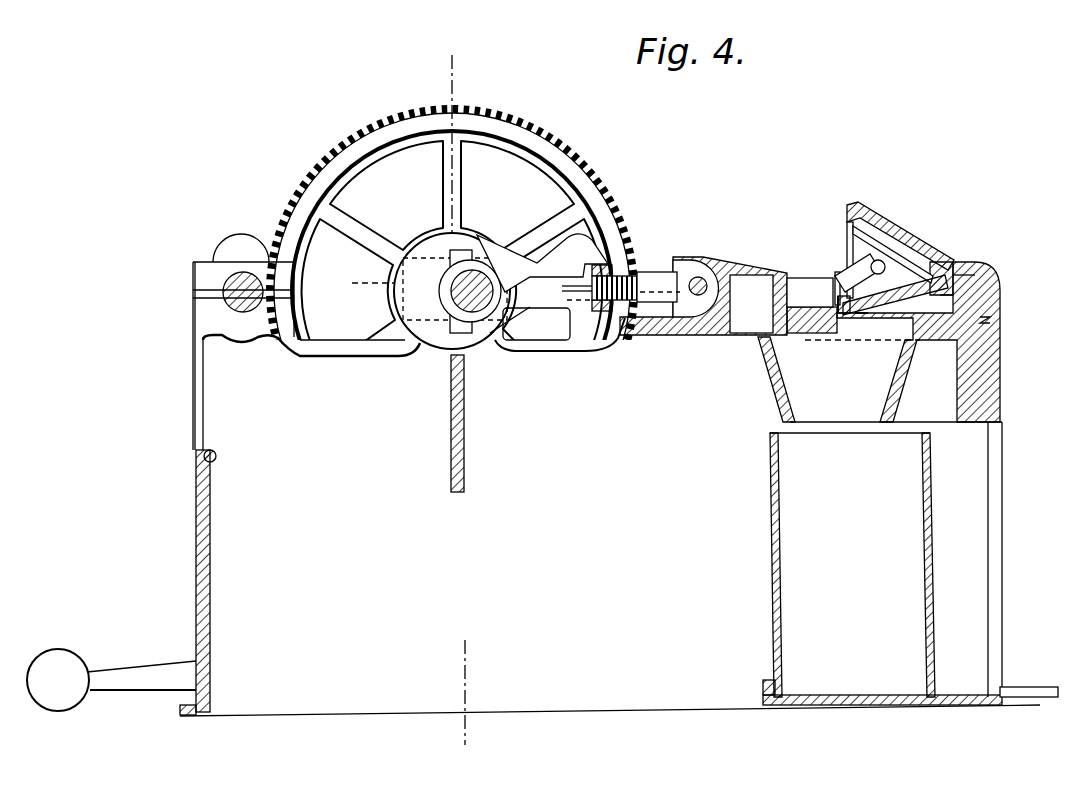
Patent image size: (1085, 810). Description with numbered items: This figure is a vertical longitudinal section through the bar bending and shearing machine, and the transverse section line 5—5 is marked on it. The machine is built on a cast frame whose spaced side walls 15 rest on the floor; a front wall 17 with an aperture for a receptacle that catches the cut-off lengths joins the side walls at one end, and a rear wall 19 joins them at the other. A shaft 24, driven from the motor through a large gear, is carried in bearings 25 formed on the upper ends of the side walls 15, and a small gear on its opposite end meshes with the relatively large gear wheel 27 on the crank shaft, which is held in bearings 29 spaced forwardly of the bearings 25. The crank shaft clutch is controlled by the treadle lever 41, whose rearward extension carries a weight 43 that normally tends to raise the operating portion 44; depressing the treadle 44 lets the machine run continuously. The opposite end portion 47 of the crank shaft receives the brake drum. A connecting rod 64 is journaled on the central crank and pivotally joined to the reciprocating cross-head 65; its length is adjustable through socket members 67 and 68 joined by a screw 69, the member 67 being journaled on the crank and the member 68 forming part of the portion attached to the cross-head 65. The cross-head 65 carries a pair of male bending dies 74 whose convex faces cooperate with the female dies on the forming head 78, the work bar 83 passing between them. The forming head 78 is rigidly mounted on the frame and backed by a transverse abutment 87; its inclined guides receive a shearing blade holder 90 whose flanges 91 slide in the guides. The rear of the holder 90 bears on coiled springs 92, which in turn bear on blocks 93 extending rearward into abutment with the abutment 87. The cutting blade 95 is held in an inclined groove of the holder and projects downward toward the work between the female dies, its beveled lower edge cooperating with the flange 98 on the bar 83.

The section line 5— 5 is at (456, 73).
The side walls 15 is at (610, 517).
The front wall 17 is at (982, 385).
The rear wall 19 is at (210, 503).
The shaft 24 is at (224, 304).
The bearings 25 is at (199, 262).
The gear wheel 27 is at (297, 190).
The bearings 29 is at (352, 294).
The treadle lever 41 is at (168, 678).
The weight 43 is at (72, 663).
The operating portion 44 is at (1020, 690).
The shaft end portion 47 is at (483, 312).
The connecting rod 64 is at (522, 308).
The cross-head member 65 is at (777, 264).
The socket member 67 is at (562, 262).
The socket member 68 is at (652, 283).
The screw 69 is at (611, 316).
The male bending dies 74 is at (798, 287).
The forming head 78 is at (887, 221).
The bar 83 is at (843, 273).
The abutment 87 is at (977, 290).
The shearing blade holder 90 is at (890, 271).
The flanges 91 is at (935, 262).
The coiled springs 92 is at (963, 262).
The blocks 93 is at (957, 280).
The cutting blade 95 is at (864, 322).
The flange 98 is at (840, 334).